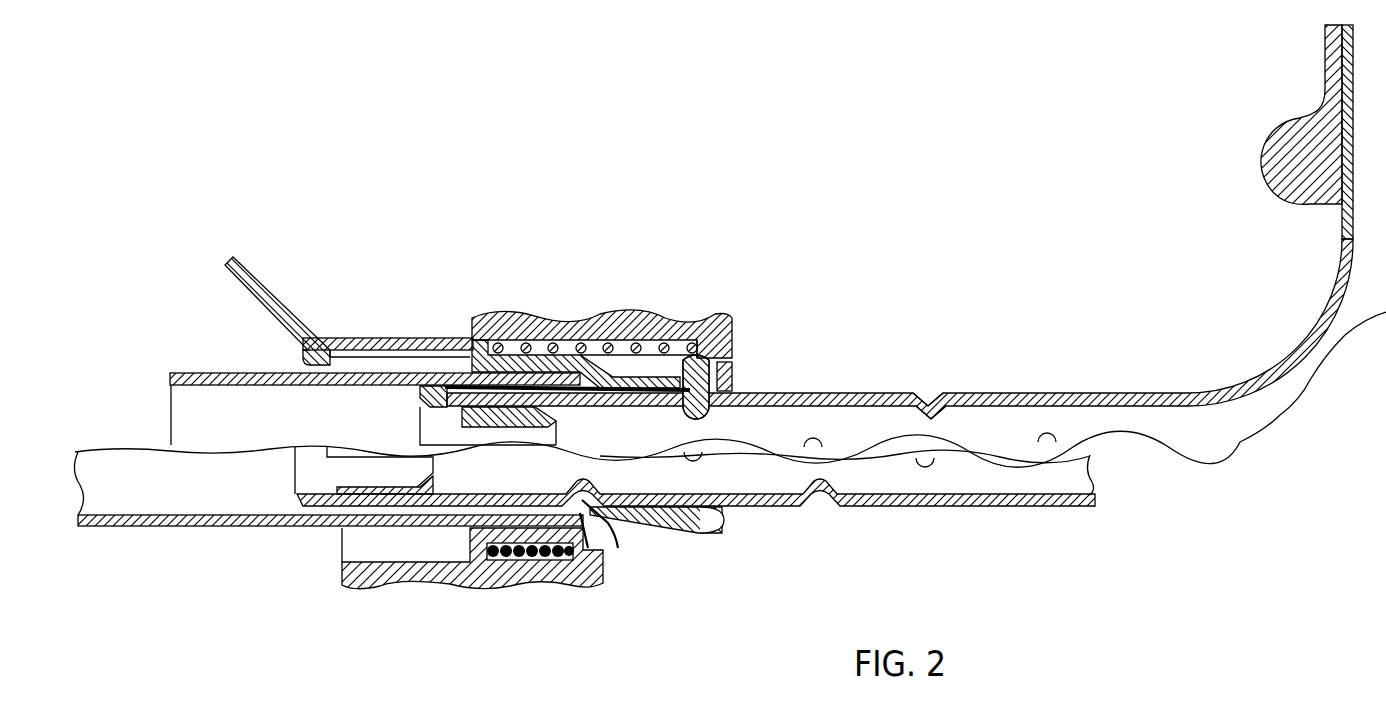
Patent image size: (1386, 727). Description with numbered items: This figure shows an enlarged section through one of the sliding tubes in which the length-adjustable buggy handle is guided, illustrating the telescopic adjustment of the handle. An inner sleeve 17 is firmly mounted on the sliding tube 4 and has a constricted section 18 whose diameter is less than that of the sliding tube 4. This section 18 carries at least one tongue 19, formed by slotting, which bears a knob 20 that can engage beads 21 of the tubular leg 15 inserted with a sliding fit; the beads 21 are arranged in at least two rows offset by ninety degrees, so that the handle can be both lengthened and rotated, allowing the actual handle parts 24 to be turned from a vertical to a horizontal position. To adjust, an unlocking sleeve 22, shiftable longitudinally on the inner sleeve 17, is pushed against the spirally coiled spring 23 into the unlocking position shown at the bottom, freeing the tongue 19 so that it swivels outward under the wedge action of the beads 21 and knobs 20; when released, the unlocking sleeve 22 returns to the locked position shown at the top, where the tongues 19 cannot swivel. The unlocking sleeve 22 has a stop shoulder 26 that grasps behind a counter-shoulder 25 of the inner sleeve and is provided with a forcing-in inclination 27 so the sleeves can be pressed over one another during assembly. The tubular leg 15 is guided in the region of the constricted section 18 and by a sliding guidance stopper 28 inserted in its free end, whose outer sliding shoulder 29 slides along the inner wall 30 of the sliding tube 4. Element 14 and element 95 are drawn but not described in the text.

The sliding tube 4 is at (148, 527).
The tank wall 14 is at (1309, 212).
The tubular leg 15 is at (990, 506).
The inner sleeve 17 is at (425, 337).
The section 18 is at (663, 380).
The tongue 19 is at (617, 377).
The knob 20 is at (710, 413).
The beads 21 is at (932, 394).
The unlocking sleeve 22 is at (597, 314).
The spirally coiled spring 23 is at (541, 335).
The handle parts 24 is at (1272, 172).
The counter-shoulder 25 is at (737, 376).
The stop shoulder 26 is at (727, 315).
The forcing-in inclination 27 is at (681, 394).
The sliding guidance stopper 28 is at (460, 412).
The outer sliding shoulder 29 is at (423, 393).
The inner wall 30 is at (112, 516).
The lever 95 is at (298, 326).